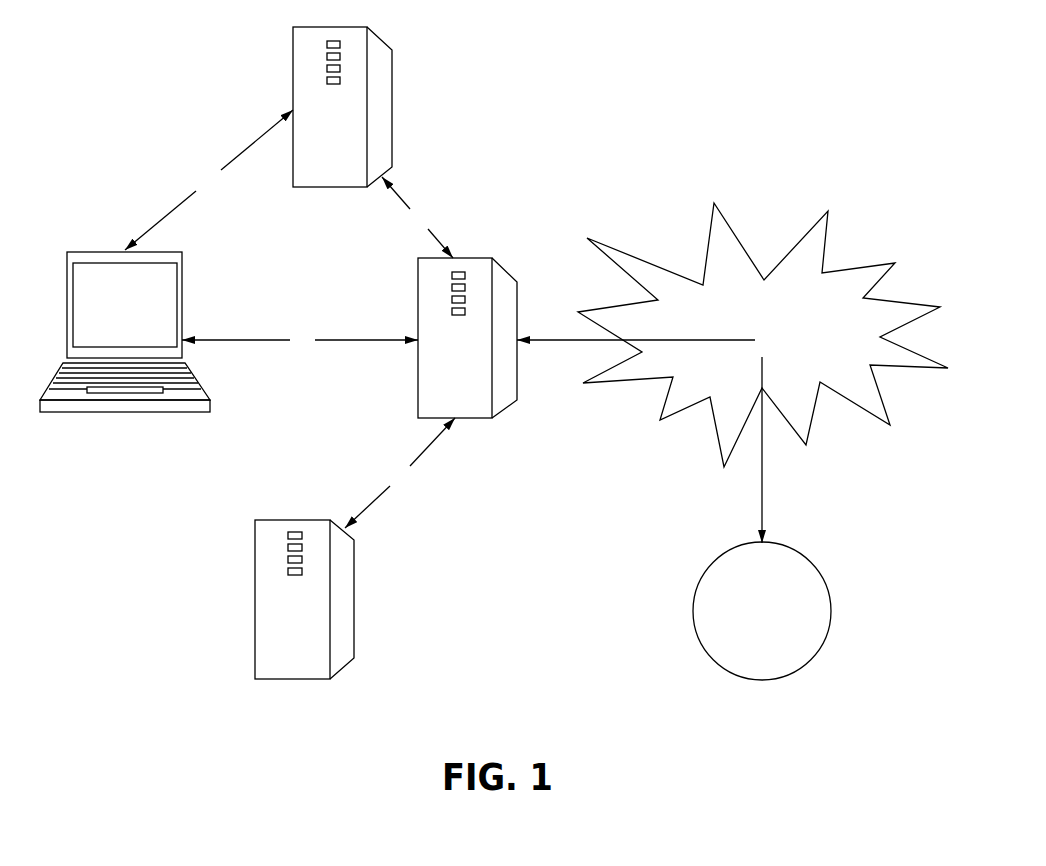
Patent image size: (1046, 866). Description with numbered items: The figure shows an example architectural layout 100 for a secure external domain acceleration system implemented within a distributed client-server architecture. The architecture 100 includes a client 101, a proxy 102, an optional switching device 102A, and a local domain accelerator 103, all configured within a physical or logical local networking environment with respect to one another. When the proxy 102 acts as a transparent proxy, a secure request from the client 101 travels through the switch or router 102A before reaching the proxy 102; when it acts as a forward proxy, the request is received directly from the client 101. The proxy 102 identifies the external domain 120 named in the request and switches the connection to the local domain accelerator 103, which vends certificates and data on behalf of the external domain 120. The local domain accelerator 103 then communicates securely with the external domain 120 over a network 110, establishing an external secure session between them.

The architectural layout 100 is at (494, 376).
The client 101 is at (183, 306).
The proxy 102 is at (418, 296).
The switching device 102A is at (293, 64).
The local domain accelerator 103 is at (255, 598).
The network 110 is at (742, 242).
The external domain 120 is at (833, 614).